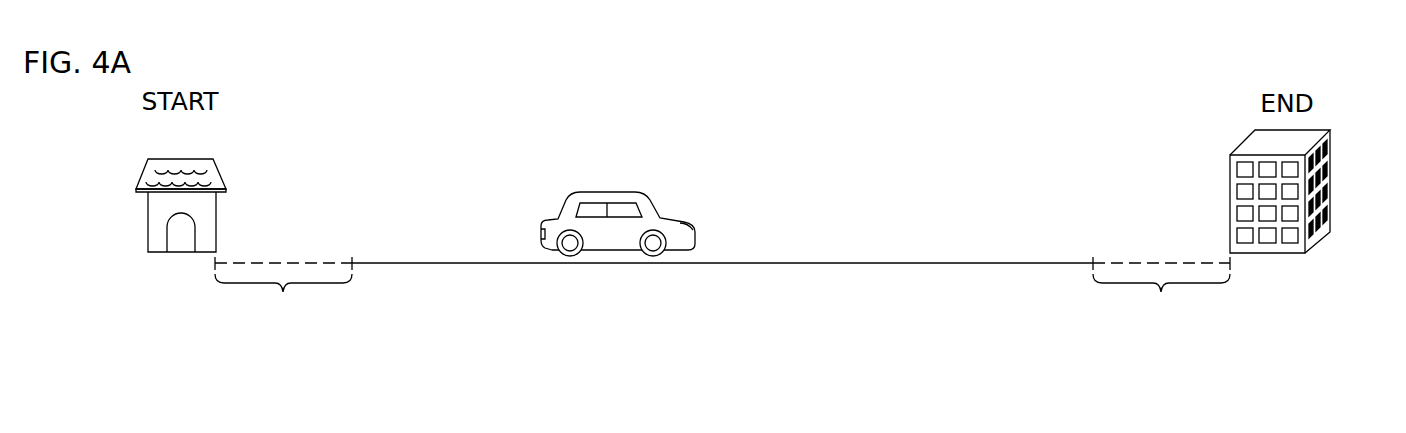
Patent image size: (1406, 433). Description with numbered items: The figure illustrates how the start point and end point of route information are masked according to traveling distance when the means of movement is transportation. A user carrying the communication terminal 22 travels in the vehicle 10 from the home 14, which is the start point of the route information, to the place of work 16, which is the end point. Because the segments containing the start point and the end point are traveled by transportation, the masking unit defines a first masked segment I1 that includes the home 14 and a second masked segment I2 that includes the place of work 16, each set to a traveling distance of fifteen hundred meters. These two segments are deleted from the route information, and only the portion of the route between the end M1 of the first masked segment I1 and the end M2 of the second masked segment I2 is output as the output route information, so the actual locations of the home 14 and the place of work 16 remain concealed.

The home 14 is at (214, 165).
The vehicle 10 is at (622, 192).
The communication terminal 22 is at (618, 224).
The place of work 16 is at (1332, 158).
The end of the first masked segment M1 is at (350, 247).
The end of the second masked segment M2 is at (1092, 248).
The first masked segment I1 is at (283, 290).
The second masked segment I2 is at (1161, 290).